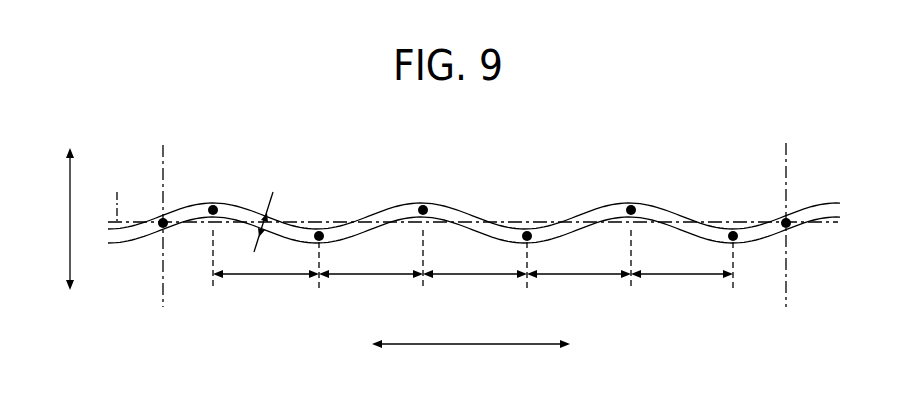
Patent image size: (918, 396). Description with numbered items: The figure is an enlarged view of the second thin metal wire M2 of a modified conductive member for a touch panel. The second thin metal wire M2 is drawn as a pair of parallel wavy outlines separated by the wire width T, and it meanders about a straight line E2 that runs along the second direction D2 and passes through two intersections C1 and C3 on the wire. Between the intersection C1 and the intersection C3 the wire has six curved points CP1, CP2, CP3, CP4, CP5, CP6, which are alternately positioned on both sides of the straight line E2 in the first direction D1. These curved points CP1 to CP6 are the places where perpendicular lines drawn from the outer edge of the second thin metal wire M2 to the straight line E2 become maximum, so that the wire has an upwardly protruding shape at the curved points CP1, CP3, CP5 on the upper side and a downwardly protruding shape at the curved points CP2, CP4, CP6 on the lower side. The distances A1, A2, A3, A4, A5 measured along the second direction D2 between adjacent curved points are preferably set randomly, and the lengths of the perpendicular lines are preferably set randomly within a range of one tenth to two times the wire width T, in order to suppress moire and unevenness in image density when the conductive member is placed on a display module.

The second thin metal wire M2 is at (818, 205).
The intersection C1 is at (158, 230).
The intersection C3 is at (790, 228).
The straight line E2 is at (112, 191).
The wire width T is at (268, 207).
The first direction D1 is at (51, 219).
The second direction D2 is at (471, 358).
The curved point CP1 is at (213, 206).
The curved point CP2 is at (319, 232).
The curved point CP3 is at (423, 206).
The curved point CP4 is at (527, 232).
The curved point CP5 is at (631, 206).
The curved point CP6 is at (733, 232).
The distance A1 is at (266, 288).
The distance A2 is at (371, 288).
The distance A3 is at (475, 288).
The distance A4 is at (579, 288).
The distance A5 is at (682, 288).